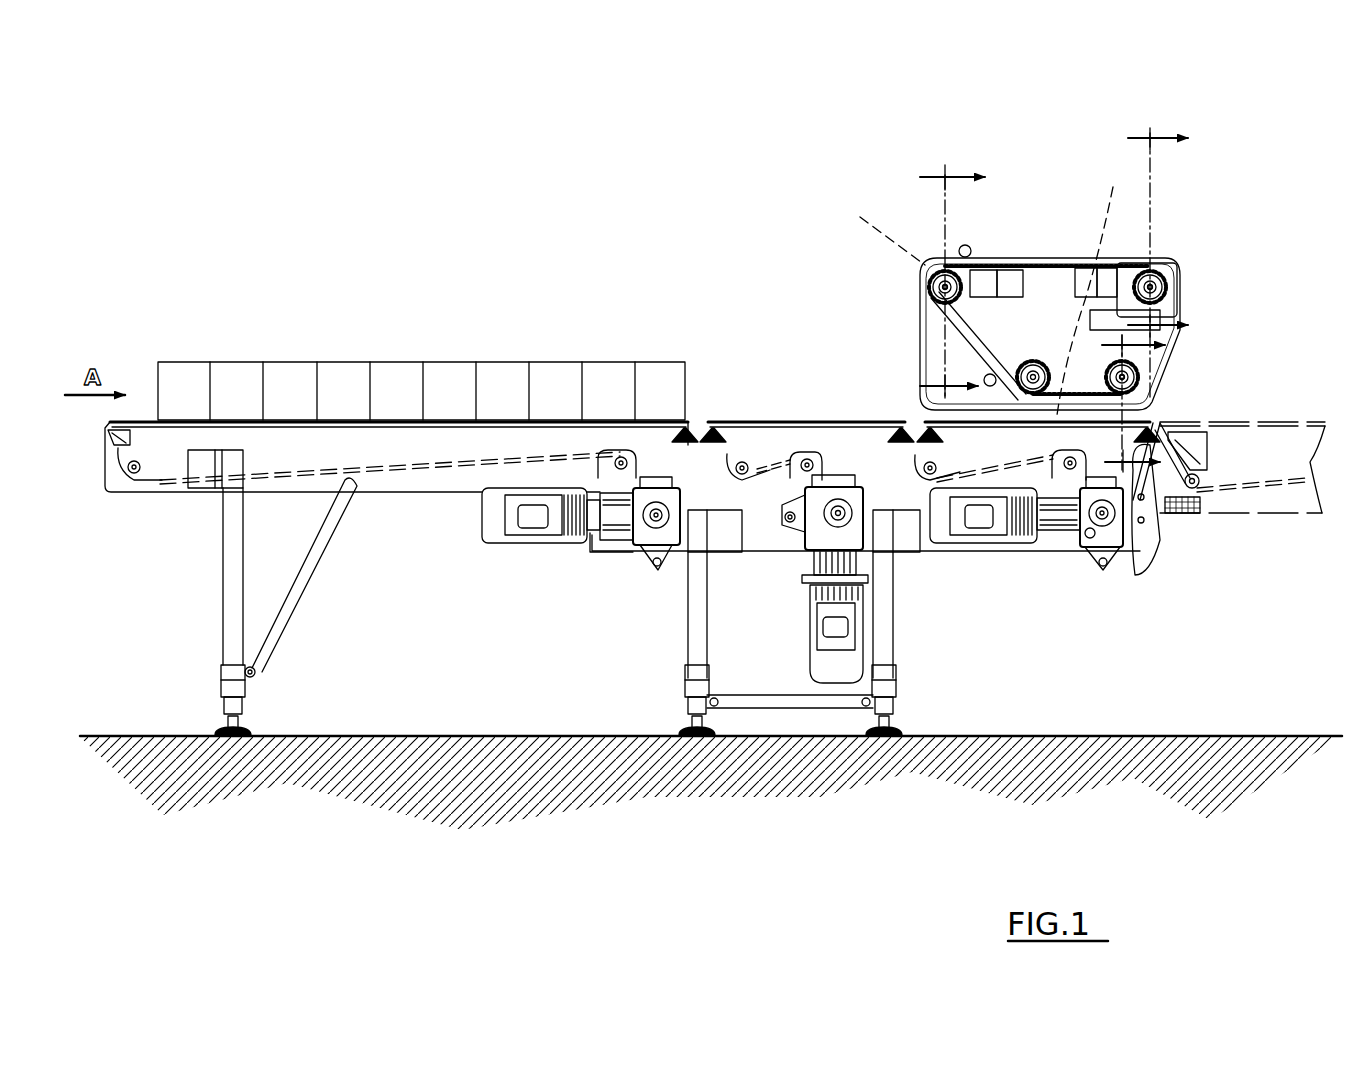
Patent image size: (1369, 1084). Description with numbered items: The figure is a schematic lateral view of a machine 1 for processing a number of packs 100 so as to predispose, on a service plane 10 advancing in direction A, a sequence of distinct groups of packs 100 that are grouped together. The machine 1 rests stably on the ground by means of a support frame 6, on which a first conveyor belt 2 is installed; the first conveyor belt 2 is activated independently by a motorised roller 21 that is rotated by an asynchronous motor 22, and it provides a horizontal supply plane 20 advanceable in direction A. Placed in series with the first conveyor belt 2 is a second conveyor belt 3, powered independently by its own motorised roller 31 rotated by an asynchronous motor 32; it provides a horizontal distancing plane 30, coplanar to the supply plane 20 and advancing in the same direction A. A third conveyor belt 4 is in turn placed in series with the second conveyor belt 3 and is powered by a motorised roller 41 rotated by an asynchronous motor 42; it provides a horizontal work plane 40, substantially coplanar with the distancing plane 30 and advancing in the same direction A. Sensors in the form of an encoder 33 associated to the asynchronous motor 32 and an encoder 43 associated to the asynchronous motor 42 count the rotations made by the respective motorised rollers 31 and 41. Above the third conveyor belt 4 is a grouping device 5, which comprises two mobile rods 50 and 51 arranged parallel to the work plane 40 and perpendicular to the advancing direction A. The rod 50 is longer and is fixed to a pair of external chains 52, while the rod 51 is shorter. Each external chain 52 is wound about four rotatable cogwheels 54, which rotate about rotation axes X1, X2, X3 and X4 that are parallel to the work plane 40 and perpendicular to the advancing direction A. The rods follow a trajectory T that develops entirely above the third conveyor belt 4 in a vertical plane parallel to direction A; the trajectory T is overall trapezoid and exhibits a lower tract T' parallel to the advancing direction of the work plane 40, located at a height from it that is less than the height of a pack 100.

The machine 1 is at (262, 205).
The packs 100 is at (232, 378).
The first conveyor belt 2 is at (389, 504).
The supply plane 20 is at (403, 416).
The motorised roller 21 is at (653, 513).
The asynchronous motor 22 is at (573, 540).
The support frame 6 is at (230, 592).
The second conveyor belt 3 is at (866, 502).
The distancing plane 30 is at (806, 416).
The motorised roller 31 is at (813, 537).
The asynchronous motor 32 is at (857, 593).
The encoder 33 is at (837, 625).
The third conveyor belt 4 is at (1093, 509).
The work plane 40 is at (1162, 420).
The motorised roller 41 is at (1133, 540).
The asynchronous motor 42 is at (1033, 512).
The encoder 43 is at (960, 530).
The service plane 10 is at (1292, 416).
The grouping device 5 is at (1039, 299).
The mobile rod 50 is at (1025, 370).
The mobile rod 51 is at (965, 250).
The external chain 52 is at (1120, 268).
The cogwheel 54 is at (933, 272).
The rotation axis X1 is at (1150, 277).
The rotation axis X2 is at (1145, 375).
The rotation axis X3 is at (947, 287).
The rotation axis X4 is at (984, 378).
The trajectory T is at (876, 228).
The lower tract T' is at (1092, 285).